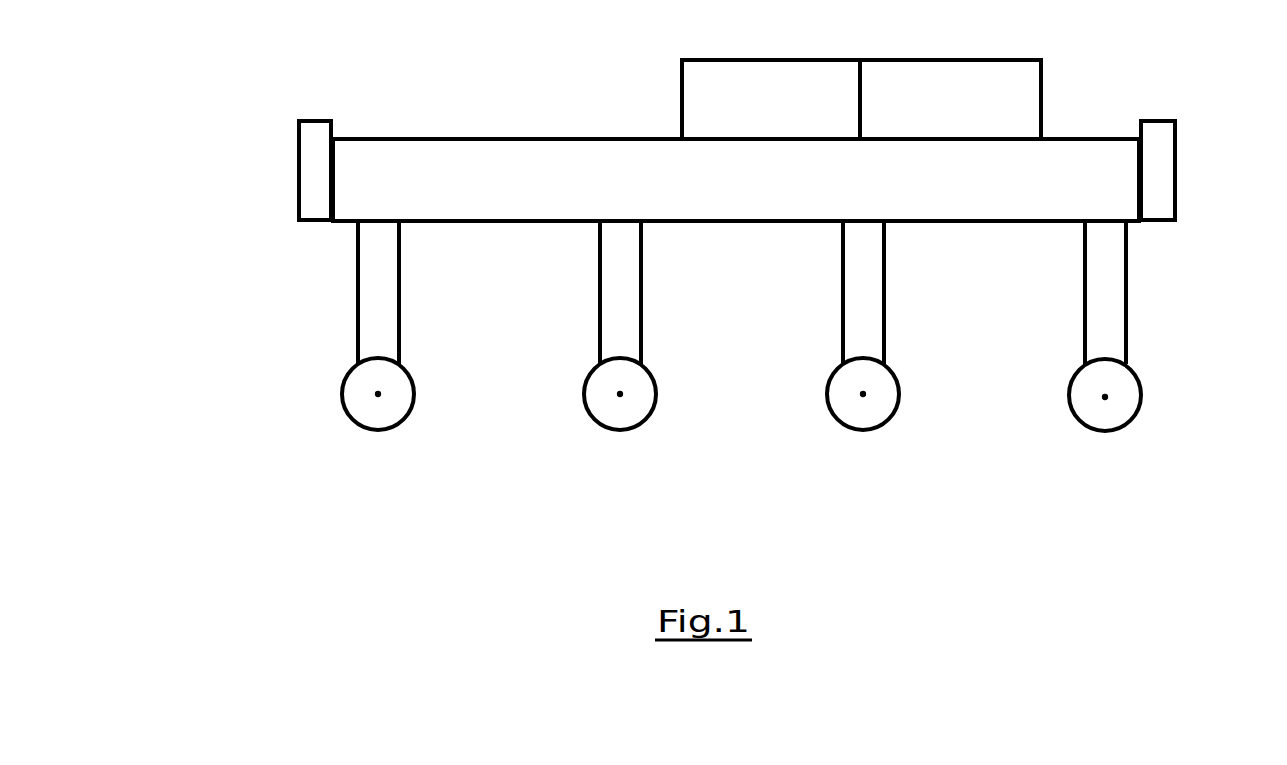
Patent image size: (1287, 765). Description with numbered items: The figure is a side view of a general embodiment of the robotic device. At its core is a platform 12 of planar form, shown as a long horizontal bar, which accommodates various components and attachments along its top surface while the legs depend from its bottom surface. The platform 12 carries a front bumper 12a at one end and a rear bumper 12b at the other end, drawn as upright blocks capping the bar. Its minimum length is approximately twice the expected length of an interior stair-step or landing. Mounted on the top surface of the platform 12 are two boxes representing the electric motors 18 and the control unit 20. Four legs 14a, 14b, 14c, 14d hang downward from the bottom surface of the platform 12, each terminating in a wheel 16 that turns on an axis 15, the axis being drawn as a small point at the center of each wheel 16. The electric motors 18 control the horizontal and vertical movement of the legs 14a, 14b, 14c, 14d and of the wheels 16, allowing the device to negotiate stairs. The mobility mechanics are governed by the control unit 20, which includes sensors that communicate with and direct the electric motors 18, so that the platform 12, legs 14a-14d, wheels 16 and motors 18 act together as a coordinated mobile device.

The platform 12 is at (479, 128).
The front bumper 12a is at (288, 161).
The rear bumper 12b is at (1186, 163).
The leg 14a is at (353, 302).
The leg 14b is at (1079, 302).
The leg 14c is at (593, 302).
The leg 14d is at (838, 302).
The axis 15 is at (376, 403).
The wheel 16 is at (420, 392).
The electric motors 18 is at (789, 116).
The control unit 20 is at (969, 116).